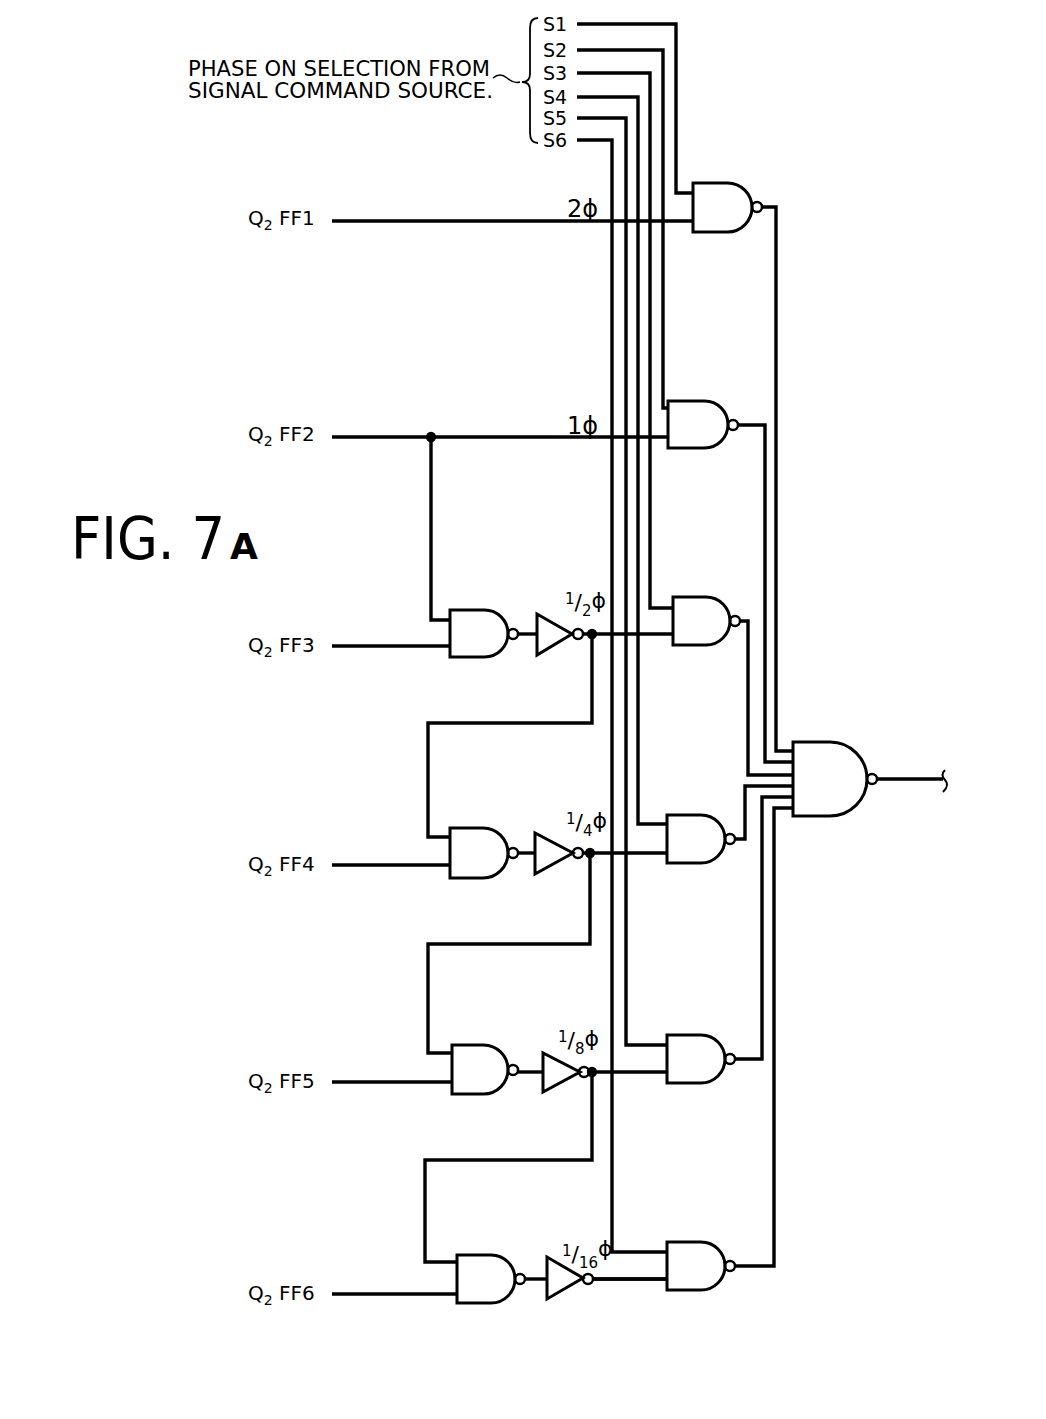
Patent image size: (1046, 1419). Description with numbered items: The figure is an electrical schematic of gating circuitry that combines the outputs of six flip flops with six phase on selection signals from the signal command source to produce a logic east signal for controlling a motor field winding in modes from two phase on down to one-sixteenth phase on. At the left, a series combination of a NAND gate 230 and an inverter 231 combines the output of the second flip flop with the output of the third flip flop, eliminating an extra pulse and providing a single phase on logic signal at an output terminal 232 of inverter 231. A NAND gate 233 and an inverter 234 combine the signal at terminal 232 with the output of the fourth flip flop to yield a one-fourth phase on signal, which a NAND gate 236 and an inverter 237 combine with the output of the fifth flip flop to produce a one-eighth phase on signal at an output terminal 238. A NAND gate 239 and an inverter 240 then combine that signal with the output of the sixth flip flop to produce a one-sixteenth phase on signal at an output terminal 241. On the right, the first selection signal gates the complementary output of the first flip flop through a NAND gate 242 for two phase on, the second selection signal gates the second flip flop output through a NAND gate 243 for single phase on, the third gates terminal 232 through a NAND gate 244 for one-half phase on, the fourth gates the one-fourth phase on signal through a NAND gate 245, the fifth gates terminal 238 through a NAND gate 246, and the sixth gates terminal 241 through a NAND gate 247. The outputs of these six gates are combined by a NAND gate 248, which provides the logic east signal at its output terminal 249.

The NAND gate 230 is at (478, 612).
The inverter 231 is at (557, 617).
The output terminal 232 is at (580, 640).
The NAND gate 233 is at (481, 835).
The inverter 234 is at (547, 835).
The NAND gate 236 is at (478, 1052).
The inverter 237 is at (553, 1050).
The output terminal 238 is at (588, 1082).
The NAND gate 239 is at (483, 1265).
The inverter 240 is at (563, 1262).
The output terminal 241 is at (600, 1284).
The NAND gate 242 is at (733, 183).
The NAND gate 243 is at (693, 401).
The NAND gate 244 is at (702, 607).
The NAND gate 245 is at (691, 818).
The NAND gate 246 is at (697, 1045).
The NAND gate 247 is at (693, 1250).
The NAND gate 248 is at (828, 742).
The output terminal 249 is at (900, 786).